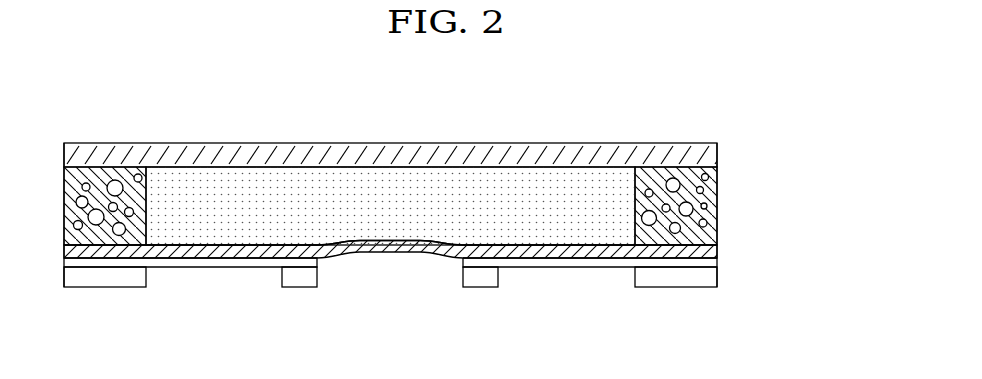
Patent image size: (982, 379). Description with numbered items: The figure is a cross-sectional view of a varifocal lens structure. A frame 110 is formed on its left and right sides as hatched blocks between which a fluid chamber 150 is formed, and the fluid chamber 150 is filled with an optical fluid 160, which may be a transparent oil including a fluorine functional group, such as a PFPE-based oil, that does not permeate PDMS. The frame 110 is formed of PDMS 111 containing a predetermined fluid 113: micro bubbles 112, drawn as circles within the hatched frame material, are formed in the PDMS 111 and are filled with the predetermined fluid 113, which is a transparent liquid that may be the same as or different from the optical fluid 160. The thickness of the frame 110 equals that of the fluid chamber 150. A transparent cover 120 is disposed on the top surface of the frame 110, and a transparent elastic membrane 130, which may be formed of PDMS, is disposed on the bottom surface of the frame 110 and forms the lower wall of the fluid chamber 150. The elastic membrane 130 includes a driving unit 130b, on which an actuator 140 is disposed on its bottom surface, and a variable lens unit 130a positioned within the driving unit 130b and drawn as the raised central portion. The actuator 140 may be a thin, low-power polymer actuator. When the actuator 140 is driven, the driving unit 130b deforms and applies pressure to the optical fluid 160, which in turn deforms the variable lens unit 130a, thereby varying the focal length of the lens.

The frame 110 is at (458, 206).
The PDMS 111 is at (718, 186).
The micro bubbles 112 is at (693, 209).
The predetermined fluid 113 is at (707, 226).
The transparent cover 120 is at (718, 157).
The transparent elastic membrane 130 is at (445, 288).
The variable lens unit 130a is at (390, 248).
The driving unit 130b is at (181, 253).
The actuator 140 is at (235, 281).
The fluid chamber 150 is at (412, 217).
The optical fluid 160 is at (500, 183).